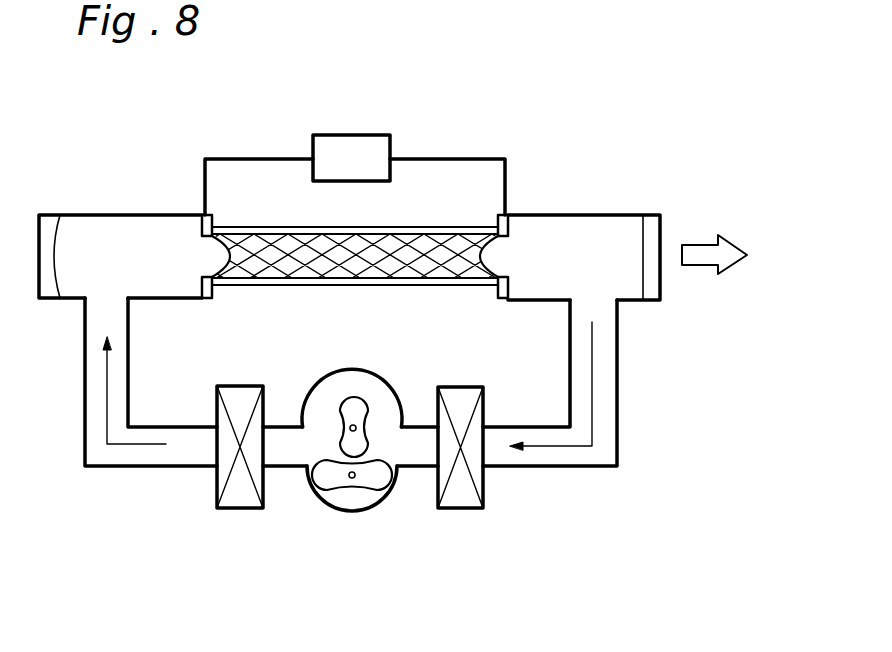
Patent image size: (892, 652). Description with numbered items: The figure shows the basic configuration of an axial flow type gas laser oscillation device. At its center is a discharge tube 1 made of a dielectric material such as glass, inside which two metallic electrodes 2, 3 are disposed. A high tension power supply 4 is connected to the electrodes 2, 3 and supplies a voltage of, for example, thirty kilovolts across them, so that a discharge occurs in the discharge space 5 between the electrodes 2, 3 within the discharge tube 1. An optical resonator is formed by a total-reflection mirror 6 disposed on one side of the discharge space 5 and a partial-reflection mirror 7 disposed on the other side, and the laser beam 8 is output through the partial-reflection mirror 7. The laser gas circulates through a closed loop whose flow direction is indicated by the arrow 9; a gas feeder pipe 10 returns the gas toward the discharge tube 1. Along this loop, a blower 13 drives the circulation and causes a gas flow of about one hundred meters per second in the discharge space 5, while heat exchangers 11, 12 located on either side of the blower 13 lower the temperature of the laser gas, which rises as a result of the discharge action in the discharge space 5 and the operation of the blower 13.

The discharge tube 1 is at (430, 282).
The metallic electrode 2 is at (203, 215).
The metallic electrode 3 is at (510, 222).
The high tension power supply 4 is at (348, 145).
The discharge space 5 is at (342, 268).
The total-reflection mirror 6 is at (45, 263).
The partial-reflection mirror 7 is at (651, 222).
The laser beam 8 is at (700, 255).
The arrow 9 is at (592, 390).
The gas feeder pipe 10 is at (153, 467).
The heat exchanger 11 is at (237, 508).
The heat exchanger 12 is at (462, 508).
The blower 13 is at (358, 505).